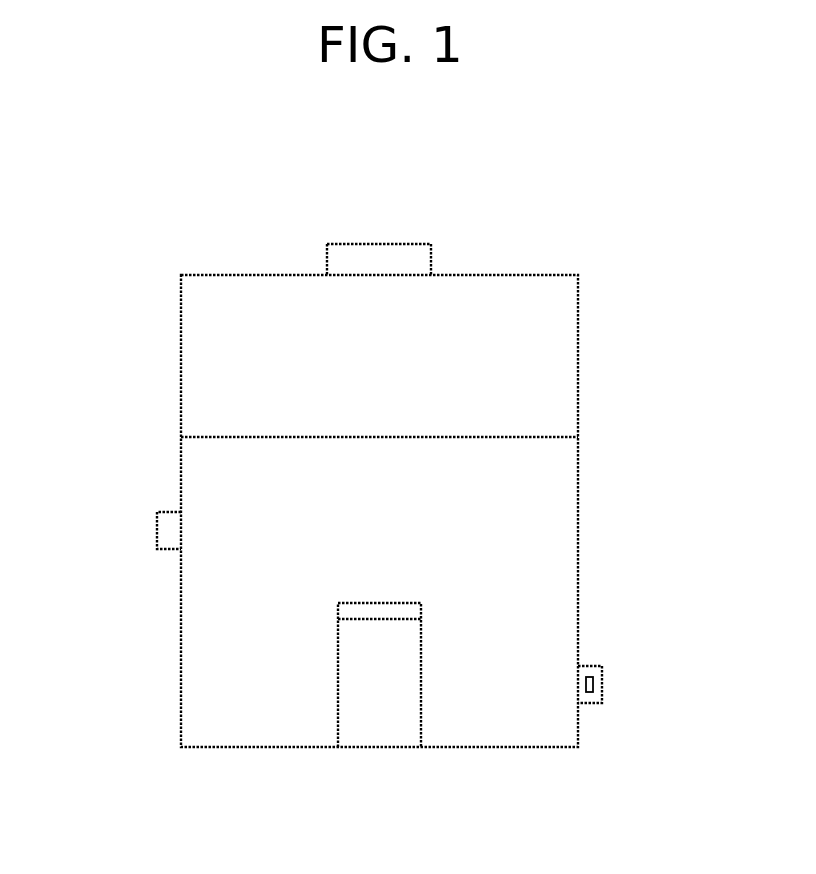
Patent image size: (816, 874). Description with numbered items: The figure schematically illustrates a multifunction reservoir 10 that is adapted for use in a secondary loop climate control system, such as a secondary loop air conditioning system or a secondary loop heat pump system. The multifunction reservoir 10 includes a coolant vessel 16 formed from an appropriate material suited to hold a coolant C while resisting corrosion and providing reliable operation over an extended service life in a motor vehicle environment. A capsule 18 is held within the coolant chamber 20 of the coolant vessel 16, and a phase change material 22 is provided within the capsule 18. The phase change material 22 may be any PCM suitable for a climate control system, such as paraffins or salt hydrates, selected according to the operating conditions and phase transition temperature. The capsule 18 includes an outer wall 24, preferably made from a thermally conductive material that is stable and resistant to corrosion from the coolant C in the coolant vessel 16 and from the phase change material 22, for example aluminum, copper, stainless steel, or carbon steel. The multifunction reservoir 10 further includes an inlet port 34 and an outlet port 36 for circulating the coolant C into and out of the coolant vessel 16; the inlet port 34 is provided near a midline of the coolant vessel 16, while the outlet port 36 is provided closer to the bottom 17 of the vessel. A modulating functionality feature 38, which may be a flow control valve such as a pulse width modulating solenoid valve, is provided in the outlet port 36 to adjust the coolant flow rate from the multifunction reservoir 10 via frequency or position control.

The multifunction reservoir 10 is at (527, 198).
The coolant vessel 16 is at (578, 318).
The bottom 17 is at (465, 747).
The capsule 18 is at (311, 673).
The coolant chamber 20 is at (197, 352).
The phase change material 22 is at (396, 619).
The outer wall 24 is at (337, 710).
The inlet port 34 is at (155, 530).
The outlet port 36 is at (602, 683).
The modulating functionality feature 38 is at (590, 700).
The coolant C is at (512, 435).